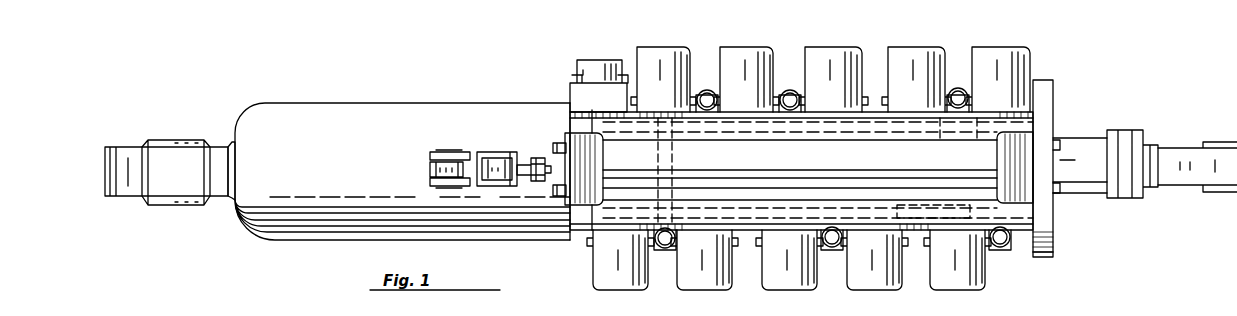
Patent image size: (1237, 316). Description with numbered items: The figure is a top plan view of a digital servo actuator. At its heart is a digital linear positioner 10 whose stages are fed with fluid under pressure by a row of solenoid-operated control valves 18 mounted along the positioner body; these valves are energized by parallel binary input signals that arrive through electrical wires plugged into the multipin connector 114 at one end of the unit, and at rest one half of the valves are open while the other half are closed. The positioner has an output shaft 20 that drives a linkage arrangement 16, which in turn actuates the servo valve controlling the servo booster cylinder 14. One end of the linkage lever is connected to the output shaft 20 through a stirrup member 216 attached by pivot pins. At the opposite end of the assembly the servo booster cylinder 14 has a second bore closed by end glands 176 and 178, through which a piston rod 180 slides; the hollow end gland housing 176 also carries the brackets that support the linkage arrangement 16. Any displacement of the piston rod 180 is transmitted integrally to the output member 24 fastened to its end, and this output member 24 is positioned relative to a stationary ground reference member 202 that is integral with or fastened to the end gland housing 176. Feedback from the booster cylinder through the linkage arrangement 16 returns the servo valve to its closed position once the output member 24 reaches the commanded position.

The digital linear positioner 10 is at (1033, 130).
The servo booster cylinder 14 is at (1046, 98).
The linkage arrangement 16 is at (450, 150).
The control valves 18 is at (661, 47).
The output shaft 20 is at (523, 163).
The output member 24 is at (1226, 146).
The multipin connector 114 is at (590, 63).
The end gland 176 is at (306, 112).
The end gland 178 is at (1047, 238).
The piston rod 180 is at (1090, 190).
The ground reference member 202 is at (163, 144).
The stirrup member 216 is at (487, 186).